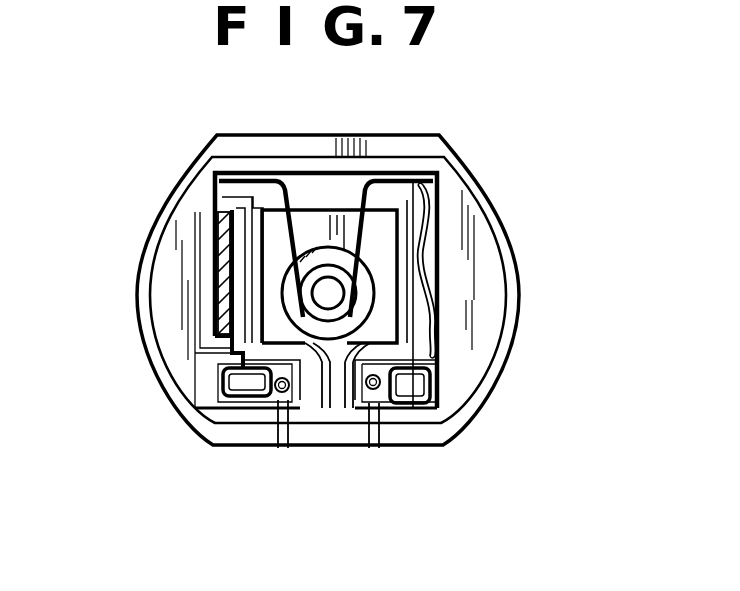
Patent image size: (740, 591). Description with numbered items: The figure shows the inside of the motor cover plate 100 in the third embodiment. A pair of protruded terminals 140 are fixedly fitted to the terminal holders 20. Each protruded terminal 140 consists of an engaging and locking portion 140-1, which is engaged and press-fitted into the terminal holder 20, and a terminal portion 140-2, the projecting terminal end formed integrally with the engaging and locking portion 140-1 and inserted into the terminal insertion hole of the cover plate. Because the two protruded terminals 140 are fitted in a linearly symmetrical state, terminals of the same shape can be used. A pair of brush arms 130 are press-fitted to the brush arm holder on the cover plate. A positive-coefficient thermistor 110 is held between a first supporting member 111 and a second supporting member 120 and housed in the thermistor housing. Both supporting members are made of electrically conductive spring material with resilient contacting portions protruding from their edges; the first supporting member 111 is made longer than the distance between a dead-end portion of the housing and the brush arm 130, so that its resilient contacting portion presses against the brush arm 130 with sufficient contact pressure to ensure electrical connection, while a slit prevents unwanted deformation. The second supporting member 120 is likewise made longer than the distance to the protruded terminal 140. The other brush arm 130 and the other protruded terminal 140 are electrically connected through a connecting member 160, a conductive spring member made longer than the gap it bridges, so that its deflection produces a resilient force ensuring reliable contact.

The motor cover plate 100 is at (470, 180).
The first supporting member 111 is at (285, 237).
The positive-coefficient thermistor 110 is at (197, 292).
The second supporting member 120 is at (322, 176).
The brush arm 130 is at (405, 175).
The connecting member 160 is at (420, 288).
The protruded terminal 140 is at (208, 389).
The engaging and locking portion 140-1 is at (220, 370).
The terminal portion 140-2 is at (357, 397).
The terminal holder 20 is at (243, 388).